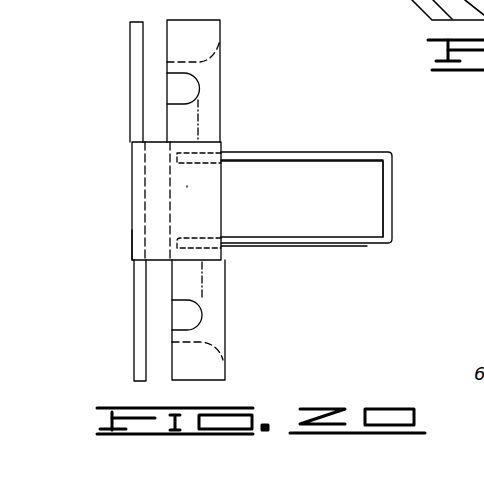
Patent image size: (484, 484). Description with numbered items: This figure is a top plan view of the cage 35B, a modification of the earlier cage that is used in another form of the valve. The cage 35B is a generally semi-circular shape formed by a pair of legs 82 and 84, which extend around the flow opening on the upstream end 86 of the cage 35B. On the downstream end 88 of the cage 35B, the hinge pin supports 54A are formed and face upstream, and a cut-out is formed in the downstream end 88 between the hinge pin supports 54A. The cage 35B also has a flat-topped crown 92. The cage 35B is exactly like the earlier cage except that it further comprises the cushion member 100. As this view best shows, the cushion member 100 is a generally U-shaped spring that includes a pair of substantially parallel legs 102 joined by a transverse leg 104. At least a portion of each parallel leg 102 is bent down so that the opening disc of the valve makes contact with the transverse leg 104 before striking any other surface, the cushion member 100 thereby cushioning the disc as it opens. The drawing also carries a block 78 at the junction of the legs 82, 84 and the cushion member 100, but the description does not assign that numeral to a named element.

The cage 35B is at (167, 200).
The leg 84 is at (128, 47).
The leg 82 is at (137, 355).
The hinge pin supports 54A is at (187, 115).
The mounting block 78 is at (160, 200).
The upstream end 86 is at (132, 230).
The flat-topped crown 92 is at (187, 187).
The downstream end 88 is at (342, 198).
The cushion member 100 is at (342, 198).
The parallel legs 102 is at (294, 152).
The transverse leg 104 is at (394, 202).